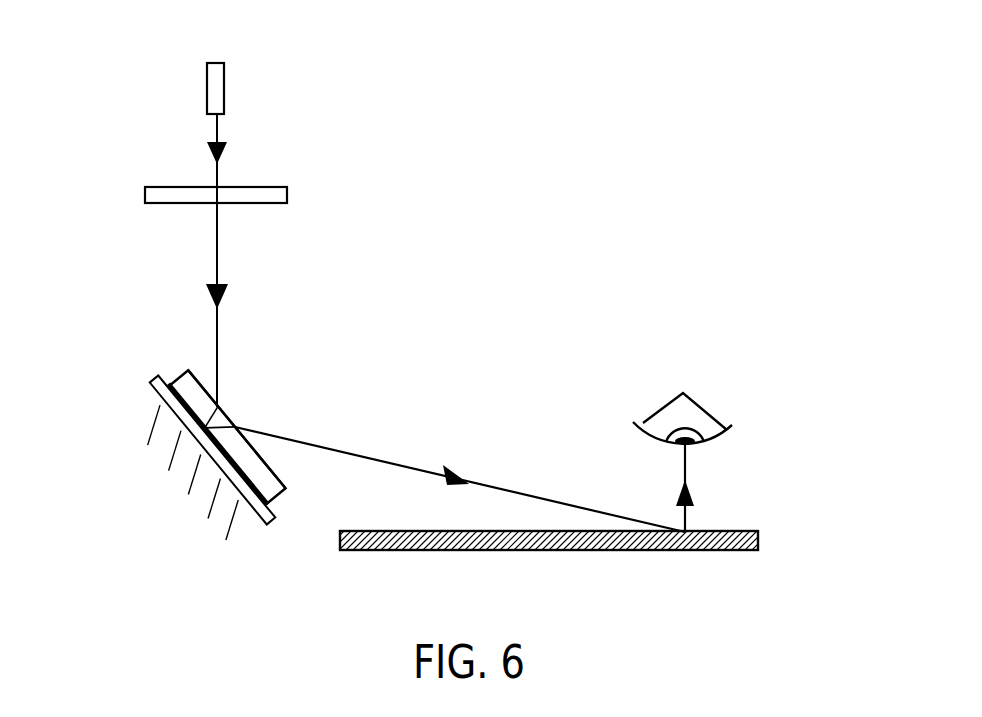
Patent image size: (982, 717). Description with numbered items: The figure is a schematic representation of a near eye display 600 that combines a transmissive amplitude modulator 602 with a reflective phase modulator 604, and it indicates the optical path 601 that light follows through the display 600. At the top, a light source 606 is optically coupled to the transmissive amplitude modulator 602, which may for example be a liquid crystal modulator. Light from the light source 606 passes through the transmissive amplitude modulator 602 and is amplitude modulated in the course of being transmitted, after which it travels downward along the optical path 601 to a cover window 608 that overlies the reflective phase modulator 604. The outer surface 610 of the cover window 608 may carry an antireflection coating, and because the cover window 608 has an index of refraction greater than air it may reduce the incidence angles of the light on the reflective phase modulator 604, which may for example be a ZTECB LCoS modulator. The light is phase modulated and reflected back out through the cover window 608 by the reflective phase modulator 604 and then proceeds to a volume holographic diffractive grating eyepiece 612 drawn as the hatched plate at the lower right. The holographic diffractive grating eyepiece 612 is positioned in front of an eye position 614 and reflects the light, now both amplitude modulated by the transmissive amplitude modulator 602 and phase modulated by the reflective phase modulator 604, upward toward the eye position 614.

The near eye display 600 is at (472, 63).
The optical path 601 is at (217, 273).
The transmissive amplitude modulator 602 is at (173, 187).
The reflective phase modulator 604 is at (147, 390).
The light source 606 is at (207, 63).
The cover window 608 is at (208, 436).
The outer surface 610 is at (267, 459).
The volume holographic diffractive grating eyepiece 612 is at (722, 533).
The eye position 614 is at (715, 423).